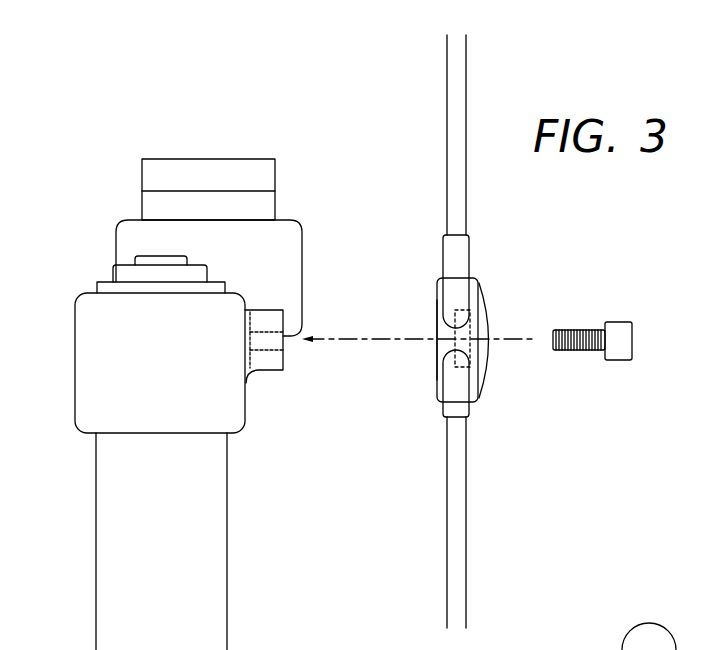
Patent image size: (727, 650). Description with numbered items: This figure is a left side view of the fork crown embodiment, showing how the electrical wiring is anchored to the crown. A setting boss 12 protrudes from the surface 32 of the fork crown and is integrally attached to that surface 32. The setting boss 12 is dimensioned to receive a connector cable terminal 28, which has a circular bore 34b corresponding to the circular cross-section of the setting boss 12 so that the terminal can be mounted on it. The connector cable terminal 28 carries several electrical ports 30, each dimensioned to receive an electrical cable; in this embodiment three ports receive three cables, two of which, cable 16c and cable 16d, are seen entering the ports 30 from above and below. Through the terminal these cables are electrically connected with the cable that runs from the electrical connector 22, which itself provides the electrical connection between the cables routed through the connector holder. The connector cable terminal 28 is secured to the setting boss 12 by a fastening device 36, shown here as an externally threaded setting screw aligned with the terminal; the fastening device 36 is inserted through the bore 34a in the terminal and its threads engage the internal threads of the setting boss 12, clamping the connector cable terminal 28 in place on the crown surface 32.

The setting boss 12 is at (269, 362).
The electrical cable 16c is at (448, 135).
The electrical cable 16d is at (467, 522).
The electrical connector 22 is at (648, 647).
The connector cable terminal 28 is at (437, 350).
The electrical ports 30 is at (437, 287).
The surface 32 is at (248, 423).
The bore 34a is at (492, 342).
The bore 34b is at (437, 322).
The fastening device 36 is at (617, 322).